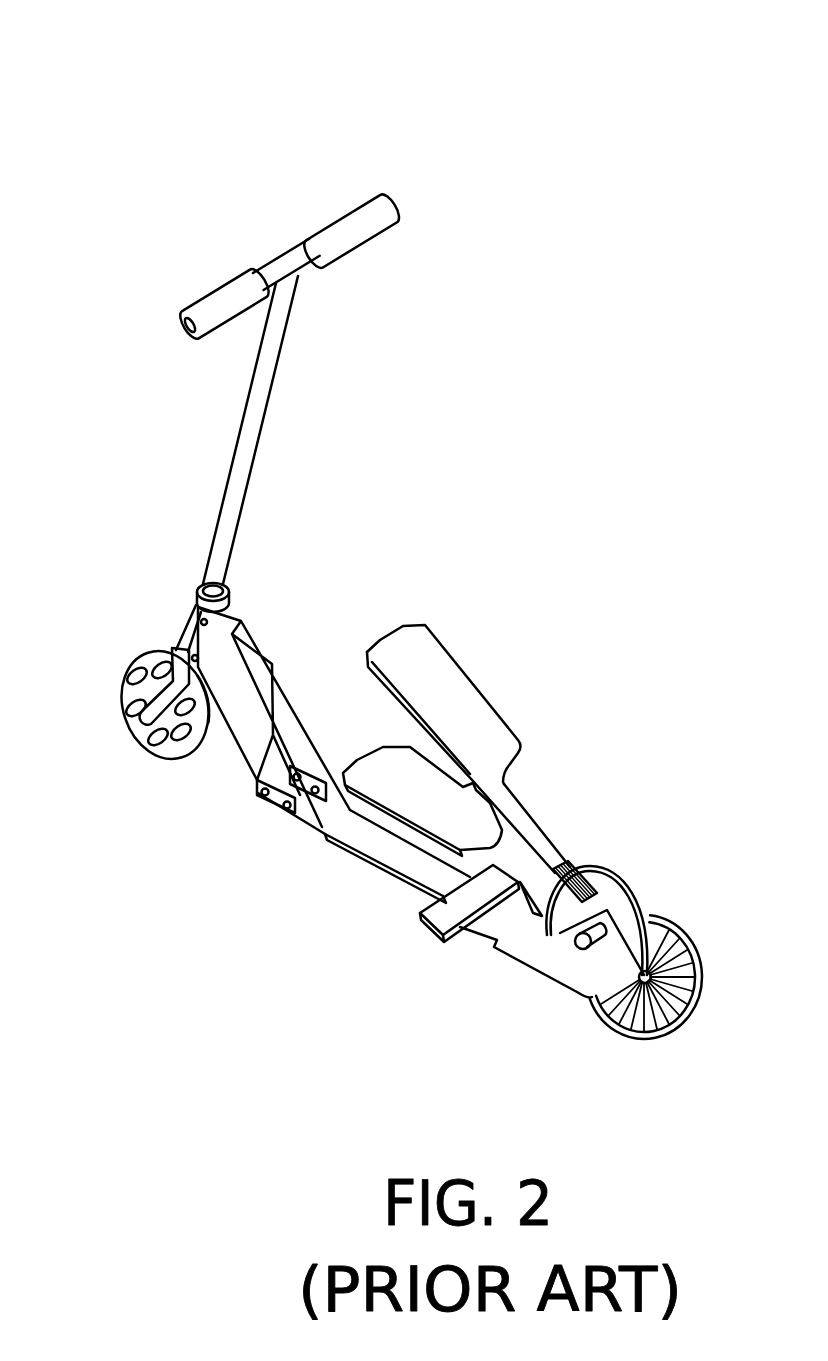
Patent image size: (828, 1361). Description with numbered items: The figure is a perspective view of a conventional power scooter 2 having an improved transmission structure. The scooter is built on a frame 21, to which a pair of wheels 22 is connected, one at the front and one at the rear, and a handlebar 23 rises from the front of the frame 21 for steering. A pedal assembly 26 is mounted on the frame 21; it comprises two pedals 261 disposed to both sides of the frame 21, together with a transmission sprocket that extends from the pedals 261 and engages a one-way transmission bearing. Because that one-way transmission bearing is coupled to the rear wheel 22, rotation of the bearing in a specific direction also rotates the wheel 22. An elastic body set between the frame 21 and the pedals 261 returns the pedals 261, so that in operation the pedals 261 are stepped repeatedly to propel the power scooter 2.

The power scooter 2 is at (178, 168).
The frame 21 is at (344, 829).
The wheels 22 is at (172, 752).
The handlebar 23 is at (287, 270).
The pedal assembly 26 is at (525, 795).
The pedals 261 is at (418, 653).